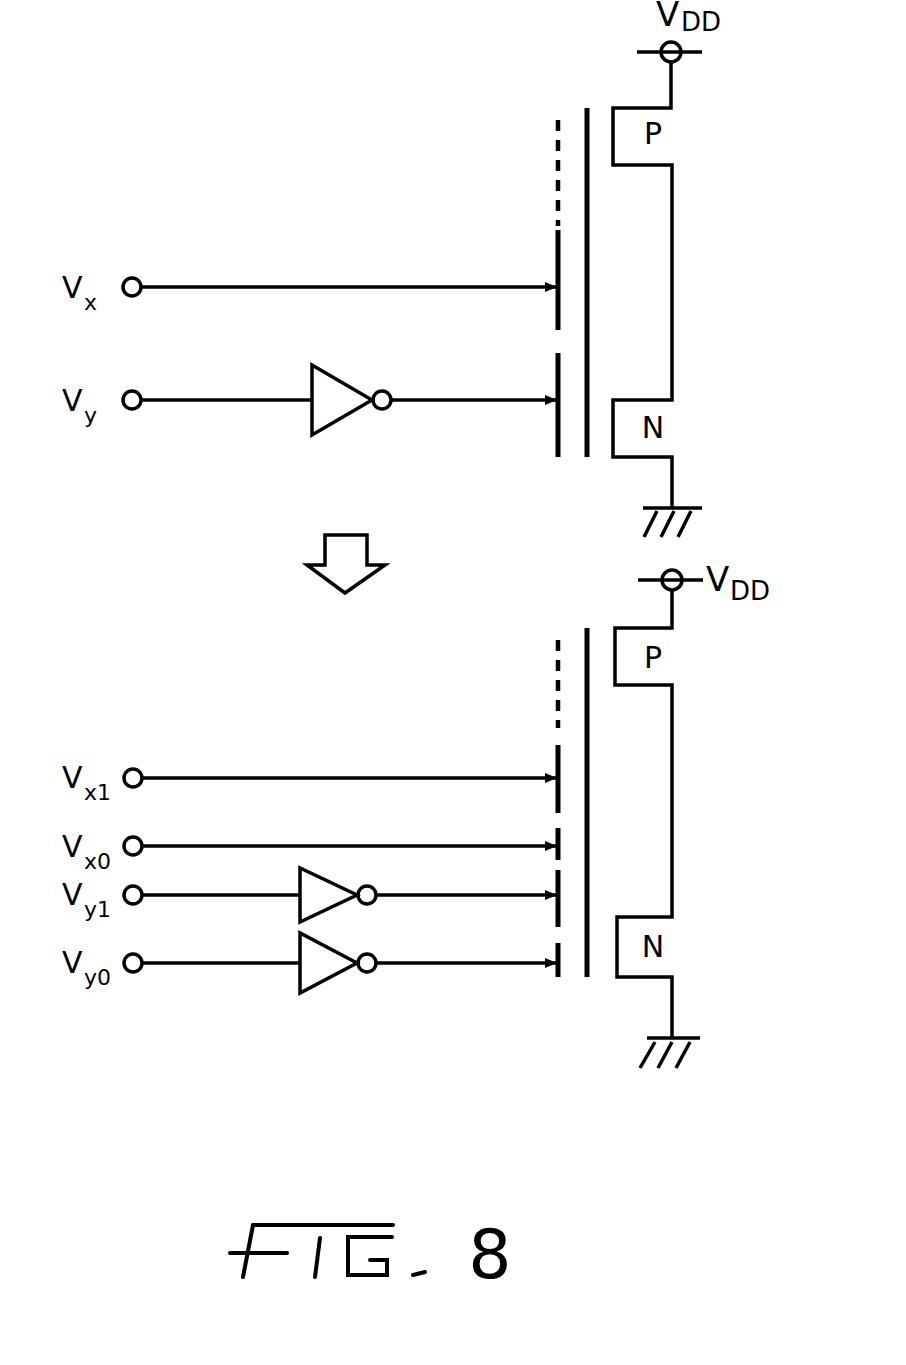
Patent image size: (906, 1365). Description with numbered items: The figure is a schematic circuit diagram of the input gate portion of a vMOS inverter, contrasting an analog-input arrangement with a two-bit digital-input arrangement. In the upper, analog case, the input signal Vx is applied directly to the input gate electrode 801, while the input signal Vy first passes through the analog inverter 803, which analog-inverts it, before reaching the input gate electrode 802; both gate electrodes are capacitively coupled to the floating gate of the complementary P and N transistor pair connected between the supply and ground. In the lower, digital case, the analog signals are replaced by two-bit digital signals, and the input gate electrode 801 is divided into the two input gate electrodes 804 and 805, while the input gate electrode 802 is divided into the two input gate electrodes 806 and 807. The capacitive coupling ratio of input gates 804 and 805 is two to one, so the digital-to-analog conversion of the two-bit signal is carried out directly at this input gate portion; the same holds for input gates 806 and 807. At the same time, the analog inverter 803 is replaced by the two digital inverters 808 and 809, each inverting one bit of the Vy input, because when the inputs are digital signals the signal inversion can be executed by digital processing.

The input gate electrode 801 is at (555, 285).
The input gate electrode 802 is at (555, 396).
The analog inverter 803 is at (335, 365).
The input gate electrode 804 is at (554, 752).
The input gate electrode 805 is at (554, 838).
The input gate electrode 806 is at (554, 884).
The input gate electrode 807 is at (554, 955).
The digital inverter 808 is at (326, 880).
The digital inverter 809 is at (330, 980).